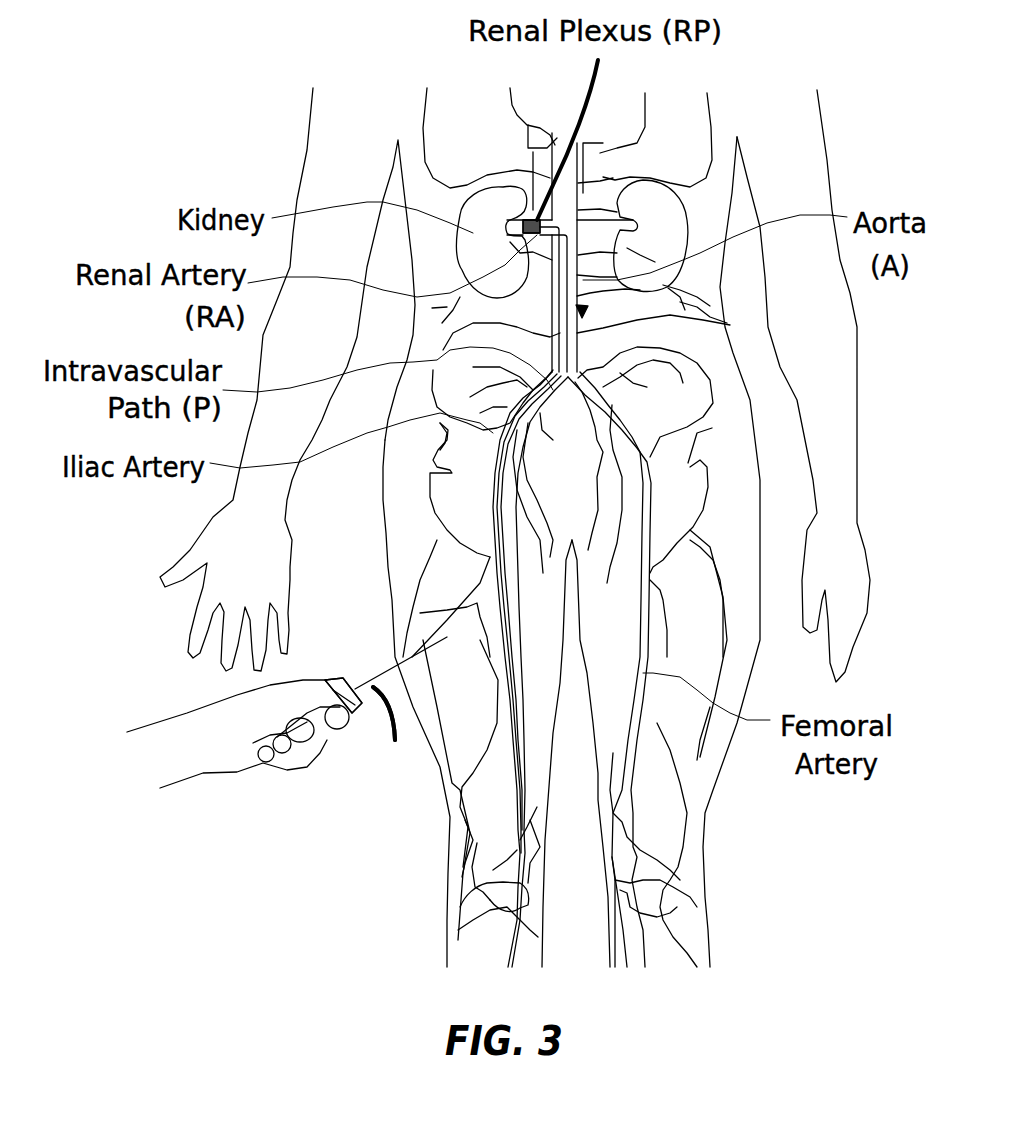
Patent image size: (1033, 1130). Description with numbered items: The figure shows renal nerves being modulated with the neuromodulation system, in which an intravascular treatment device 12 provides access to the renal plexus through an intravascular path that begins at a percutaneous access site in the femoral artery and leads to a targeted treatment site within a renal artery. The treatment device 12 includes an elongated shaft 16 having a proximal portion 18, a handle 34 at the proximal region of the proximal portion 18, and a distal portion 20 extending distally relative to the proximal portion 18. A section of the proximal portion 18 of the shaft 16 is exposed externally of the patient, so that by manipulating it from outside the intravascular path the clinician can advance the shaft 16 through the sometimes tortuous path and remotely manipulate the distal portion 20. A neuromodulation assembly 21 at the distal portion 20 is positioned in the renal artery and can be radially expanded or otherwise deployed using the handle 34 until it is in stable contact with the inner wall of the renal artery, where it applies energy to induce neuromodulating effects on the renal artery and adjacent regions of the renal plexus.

The intravascular treatment device 12 is at (587, 310).
The elongated shaft 16 is at (397, 706).
The proximal portion 18 is at (384, 731).
The distal portion 20 is at (539, 212).
The neuromodulation assembly 21 is at (427, 96).
The handle 34 is at (318, 743).